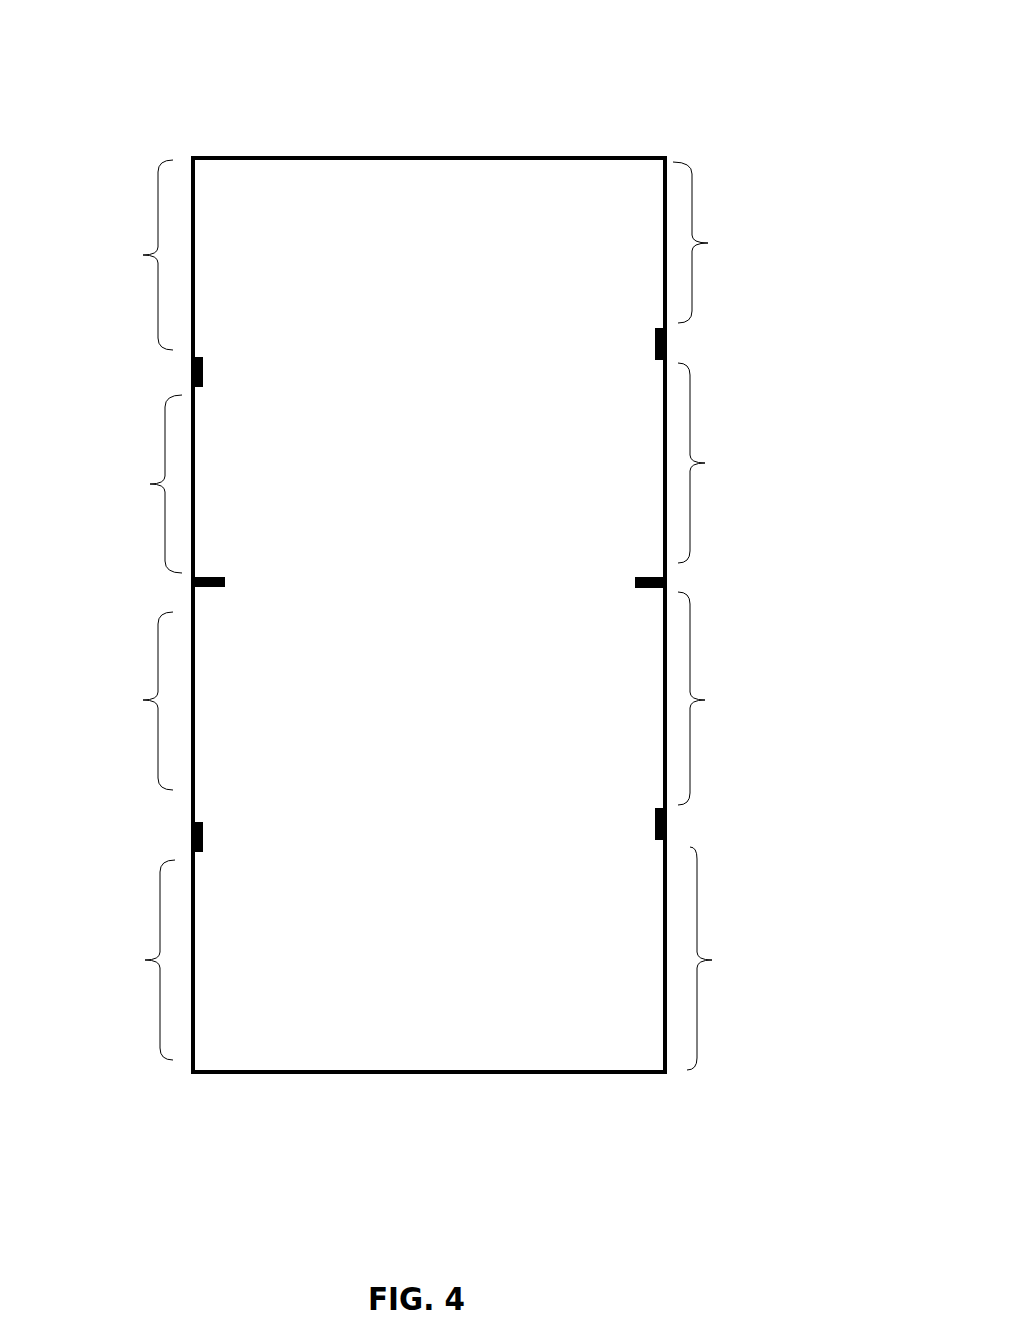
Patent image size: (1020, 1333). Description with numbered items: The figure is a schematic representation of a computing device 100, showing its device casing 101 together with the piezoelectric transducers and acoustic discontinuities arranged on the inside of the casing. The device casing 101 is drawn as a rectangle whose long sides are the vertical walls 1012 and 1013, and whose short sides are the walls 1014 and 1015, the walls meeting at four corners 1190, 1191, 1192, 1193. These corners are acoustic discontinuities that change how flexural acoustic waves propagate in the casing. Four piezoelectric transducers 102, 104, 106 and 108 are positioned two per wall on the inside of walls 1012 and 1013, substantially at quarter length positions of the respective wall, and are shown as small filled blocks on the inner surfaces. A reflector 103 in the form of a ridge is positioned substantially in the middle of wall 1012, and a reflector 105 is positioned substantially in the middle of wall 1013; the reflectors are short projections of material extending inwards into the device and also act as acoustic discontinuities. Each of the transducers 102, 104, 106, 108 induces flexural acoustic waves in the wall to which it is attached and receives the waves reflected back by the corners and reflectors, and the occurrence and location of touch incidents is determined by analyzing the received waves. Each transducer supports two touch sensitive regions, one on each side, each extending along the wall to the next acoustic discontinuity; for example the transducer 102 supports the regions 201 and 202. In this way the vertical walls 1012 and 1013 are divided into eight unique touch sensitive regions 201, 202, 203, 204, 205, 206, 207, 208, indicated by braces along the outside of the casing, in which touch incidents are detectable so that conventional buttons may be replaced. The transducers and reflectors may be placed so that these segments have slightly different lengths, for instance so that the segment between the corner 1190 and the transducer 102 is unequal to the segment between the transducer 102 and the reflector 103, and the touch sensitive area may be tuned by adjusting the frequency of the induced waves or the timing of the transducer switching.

The device 100 is at (163, 112).
The device casing 101 is at (641, 129).
The piezoelectric transducer 102 is at (666, 338).
The reflector 103 is at (668, 578).
The piezoelectric transducer 104 is at (666, 820).
The reflector 105 is at (196, 590).
The piezoelectric transducer 106 is at (192, 838).
The piezoelectric transducer 108 is at (192, 373).
The vertical wall 1012 is at (664, 452).
The vertical wall 1013 is at (194, 290).
The vertical wall 1014 is at (458, 158).
The wall 1015 is at (412, 1082).
The corner 1190 is at (664, 160).
The corner 1191 is at (663, 1067).
The corner 1192 is at (194, 1067).
The corner 1193 is at (194, 160).
The touch sensitive region 201 is at (720, 242).
The touch sensitive region 202 is at (714, 463).
The touch sensitive region 203 is at (719, 698).
The touch sensitive region 204 is at (729, 958).
The touch sensitive region 205 is at (135, 960).
The touch sensitive region 206 is at (131, 701).
The touch sensitive region 207 is at (135, 484).
The touch sensitive region 208 is at (135, 255).